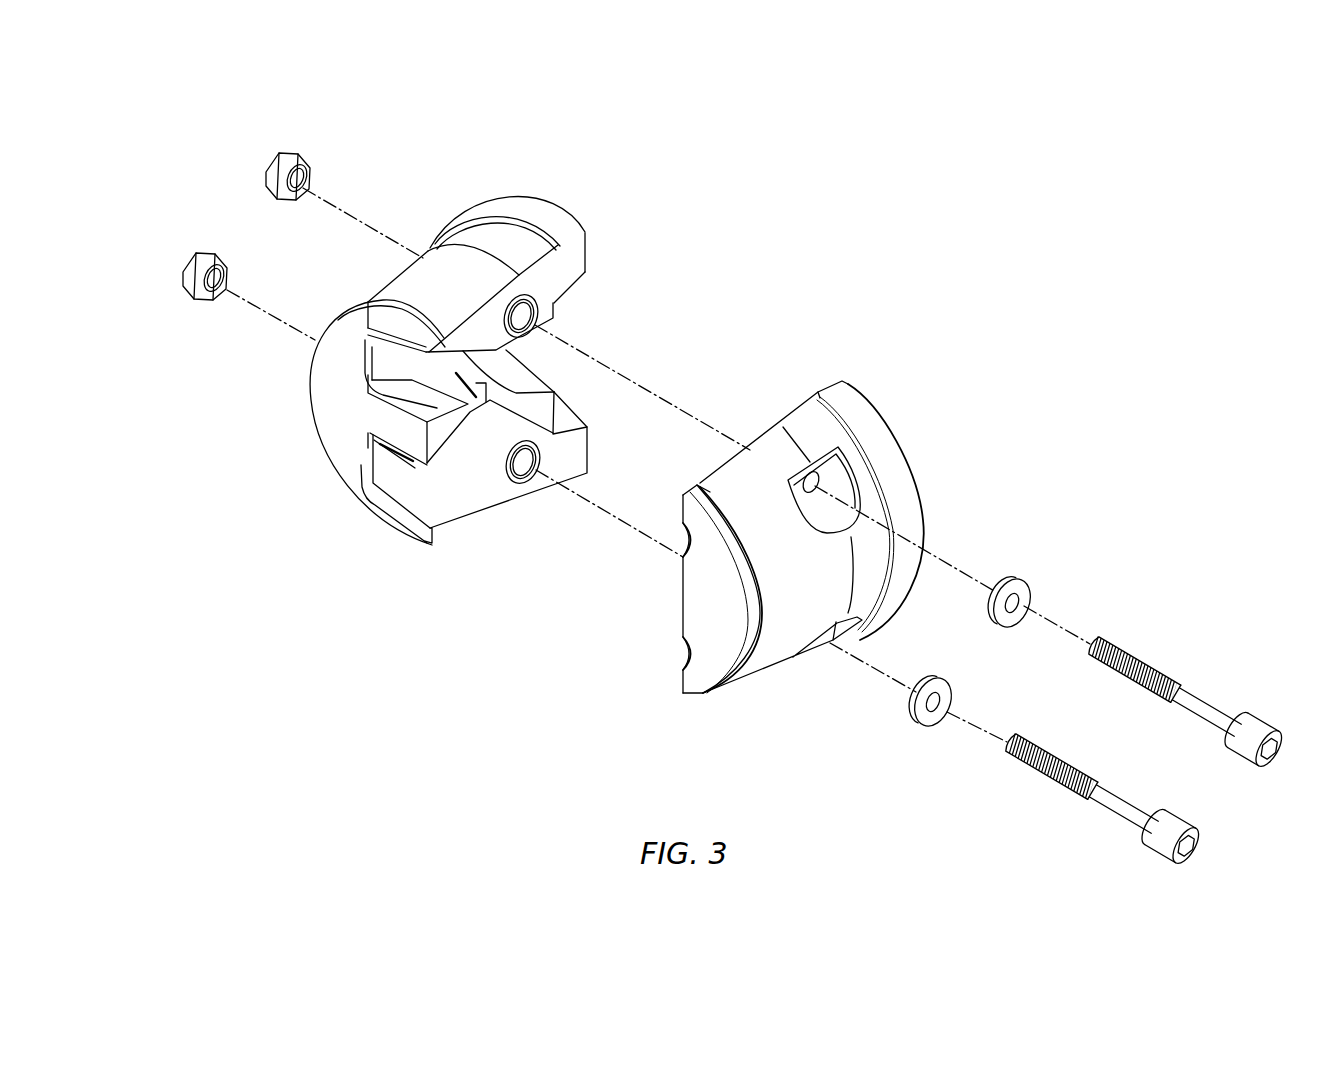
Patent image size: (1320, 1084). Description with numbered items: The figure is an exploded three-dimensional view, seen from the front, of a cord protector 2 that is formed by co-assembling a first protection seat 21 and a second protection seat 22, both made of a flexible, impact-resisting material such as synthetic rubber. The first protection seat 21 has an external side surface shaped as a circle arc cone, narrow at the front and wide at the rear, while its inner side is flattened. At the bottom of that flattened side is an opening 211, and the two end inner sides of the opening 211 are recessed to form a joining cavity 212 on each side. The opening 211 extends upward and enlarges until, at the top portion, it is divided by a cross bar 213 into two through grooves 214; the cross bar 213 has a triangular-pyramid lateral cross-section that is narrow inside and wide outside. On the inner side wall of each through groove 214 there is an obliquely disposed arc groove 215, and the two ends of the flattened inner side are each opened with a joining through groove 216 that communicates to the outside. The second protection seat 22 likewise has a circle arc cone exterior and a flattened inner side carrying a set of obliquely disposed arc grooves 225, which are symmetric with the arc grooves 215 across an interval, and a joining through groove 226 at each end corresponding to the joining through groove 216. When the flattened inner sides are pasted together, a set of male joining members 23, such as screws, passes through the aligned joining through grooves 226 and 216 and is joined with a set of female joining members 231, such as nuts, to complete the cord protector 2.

The cord protector 2 is at (780, 300).
The first protection seat 21 is at (345, 391).
The opening 211 is at (557, 356).
The joining cavity 212 is at (570, 307).
The cross bar 213 is at (402, 427).
The through groove 214 is at (403, 377).
The arc groove 215 is at (392, 355).
The joining through groove 216 is at (532, 300).
The second protection seat 22 is at (773, 650).
The arc groove 225 is at (680, 538).
The joining through groove 226 is at (814, 483).
The male joining member 23 is at (1207, 710).
The female joining member 231 is at (277, 160).